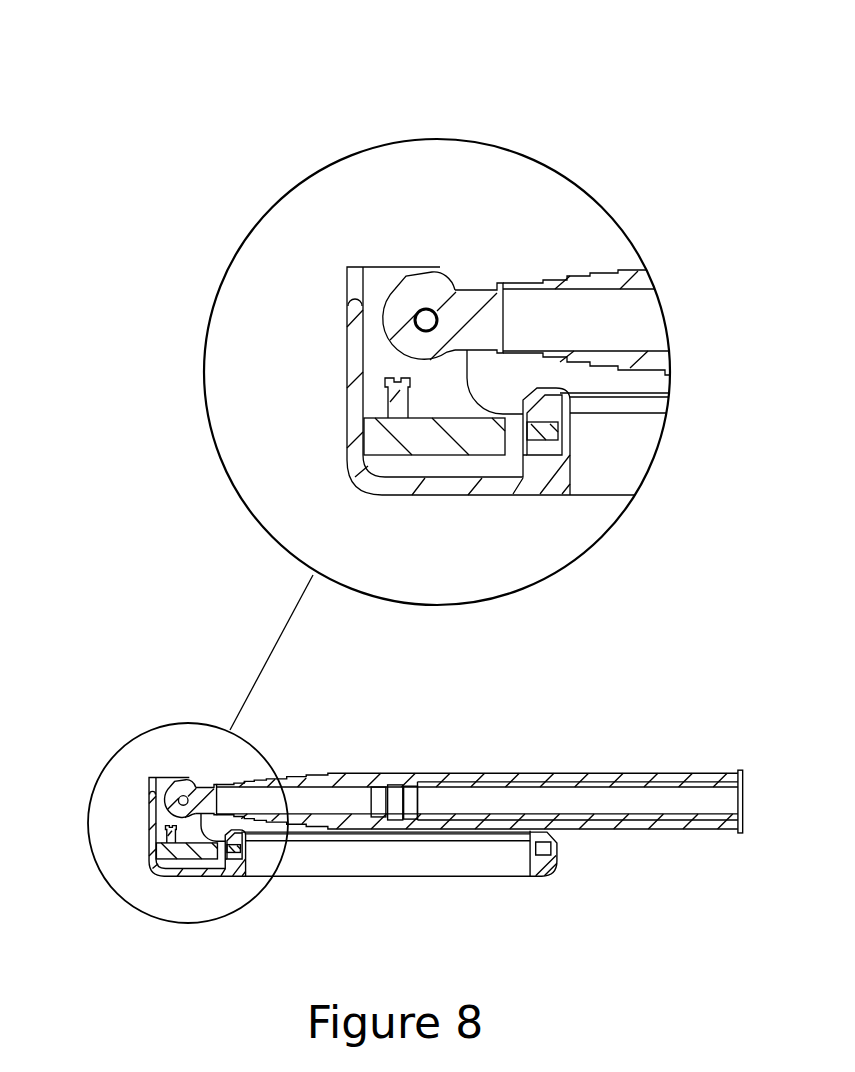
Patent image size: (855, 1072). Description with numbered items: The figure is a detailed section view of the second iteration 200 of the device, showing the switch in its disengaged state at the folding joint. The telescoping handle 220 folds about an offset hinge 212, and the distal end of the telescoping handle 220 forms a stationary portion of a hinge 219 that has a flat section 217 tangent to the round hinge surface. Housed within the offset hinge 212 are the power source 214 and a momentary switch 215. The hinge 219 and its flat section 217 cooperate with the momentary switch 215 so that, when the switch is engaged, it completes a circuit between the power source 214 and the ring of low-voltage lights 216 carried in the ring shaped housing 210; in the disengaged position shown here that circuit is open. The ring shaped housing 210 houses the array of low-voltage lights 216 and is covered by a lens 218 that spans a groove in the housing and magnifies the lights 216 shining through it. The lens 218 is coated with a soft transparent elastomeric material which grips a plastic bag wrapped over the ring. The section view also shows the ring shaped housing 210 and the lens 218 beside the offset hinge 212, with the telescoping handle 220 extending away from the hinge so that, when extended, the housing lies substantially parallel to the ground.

The second iteration 200 is at (90, 53).
The ring shaped housing 210 is at (618, 472).
The offset hinge 212 is at (357, 340).
The power source 214 is at (385, 440).
The momentary switch 215 is at (393, 378).
The low-voltage lights 216 is at (542, 437).
The flat section 217 is at (393, 282).
The lens 218 is at (636, 398).
The hinge 219 is at (428, 309).
The telescoping handle 220 is at (541, 300).